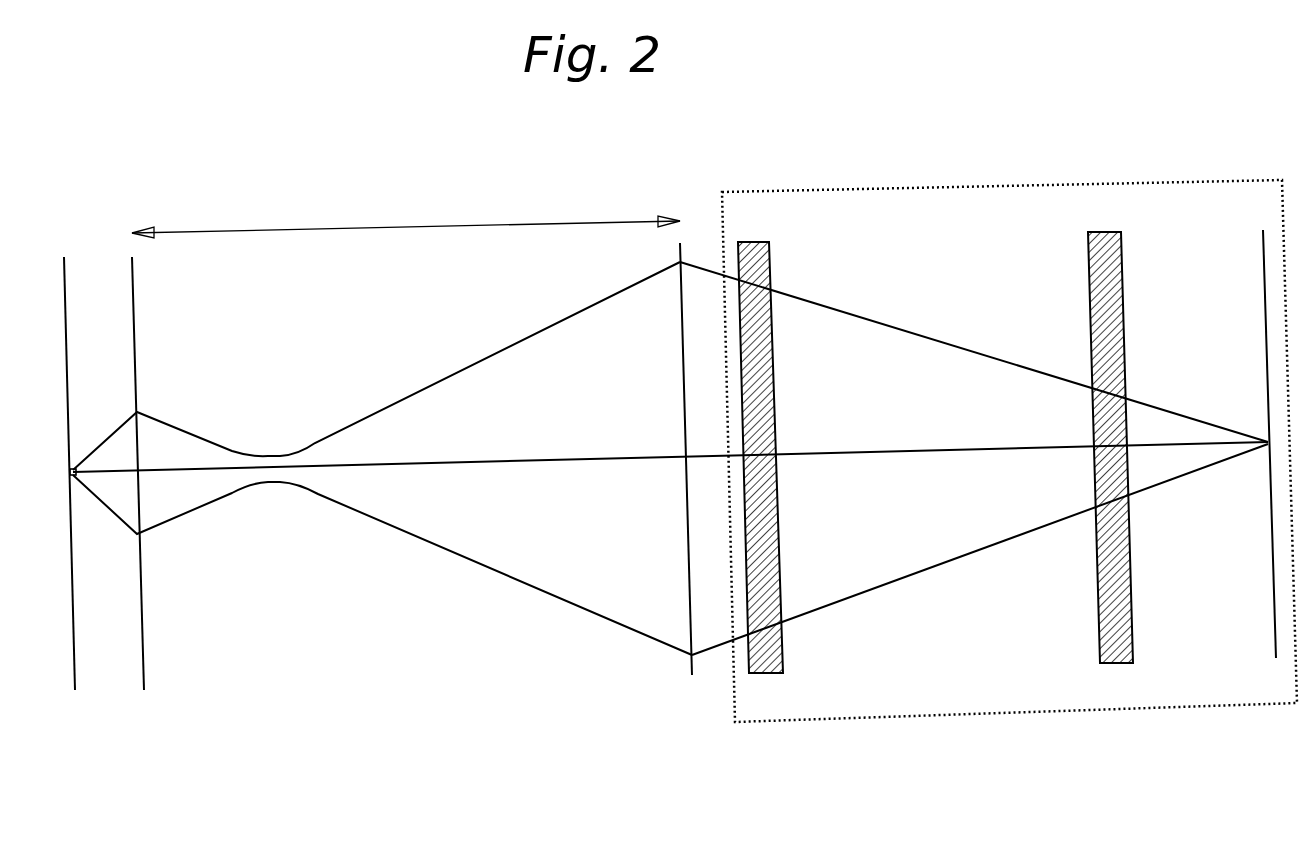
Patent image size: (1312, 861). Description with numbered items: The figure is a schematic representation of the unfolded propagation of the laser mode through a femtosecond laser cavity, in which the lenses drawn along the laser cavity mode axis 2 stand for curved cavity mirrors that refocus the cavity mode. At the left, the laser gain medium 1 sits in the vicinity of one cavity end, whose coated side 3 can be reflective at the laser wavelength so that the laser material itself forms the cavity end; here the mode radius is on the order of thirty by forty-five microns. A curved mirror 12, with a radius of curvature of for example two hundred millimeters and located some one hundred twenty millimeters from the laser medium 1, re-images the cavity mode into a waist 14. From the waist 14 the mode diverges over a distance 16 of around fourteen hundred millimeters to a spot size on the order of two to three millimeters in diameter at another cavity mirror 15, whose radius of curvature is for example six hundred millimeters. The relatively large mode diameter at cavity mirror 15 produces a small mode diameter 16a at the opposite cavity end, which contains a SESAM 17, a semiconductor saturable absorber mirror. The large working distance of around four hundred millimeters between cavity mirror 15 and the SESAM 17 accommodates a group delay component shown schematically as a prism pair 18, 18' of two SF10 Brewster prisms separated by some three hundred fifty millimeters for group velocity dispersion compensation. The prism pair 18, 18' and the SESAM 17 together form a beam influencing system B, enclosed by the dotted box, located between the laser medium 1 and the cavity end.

The laser gain medium 1 is at (142, 306).
The laser cavity mode axis 2 is at (670, 565).
The coated side of laser material 3 is at (149, 533).
The curved mirror 12 is at (203, 492).
The waist 14 is at (382, 465).
The cavity mirror 15 is at (591, 535).
The distance 16 is at (406, 210).
The mode diameter 16a is at (974, 517).
The SESAM 17 is at (1191, 524).
The prism 18 is at (820, 405).
The prism 18' is at (1180, 396).
The beam influencing system B is at (1009, 496).